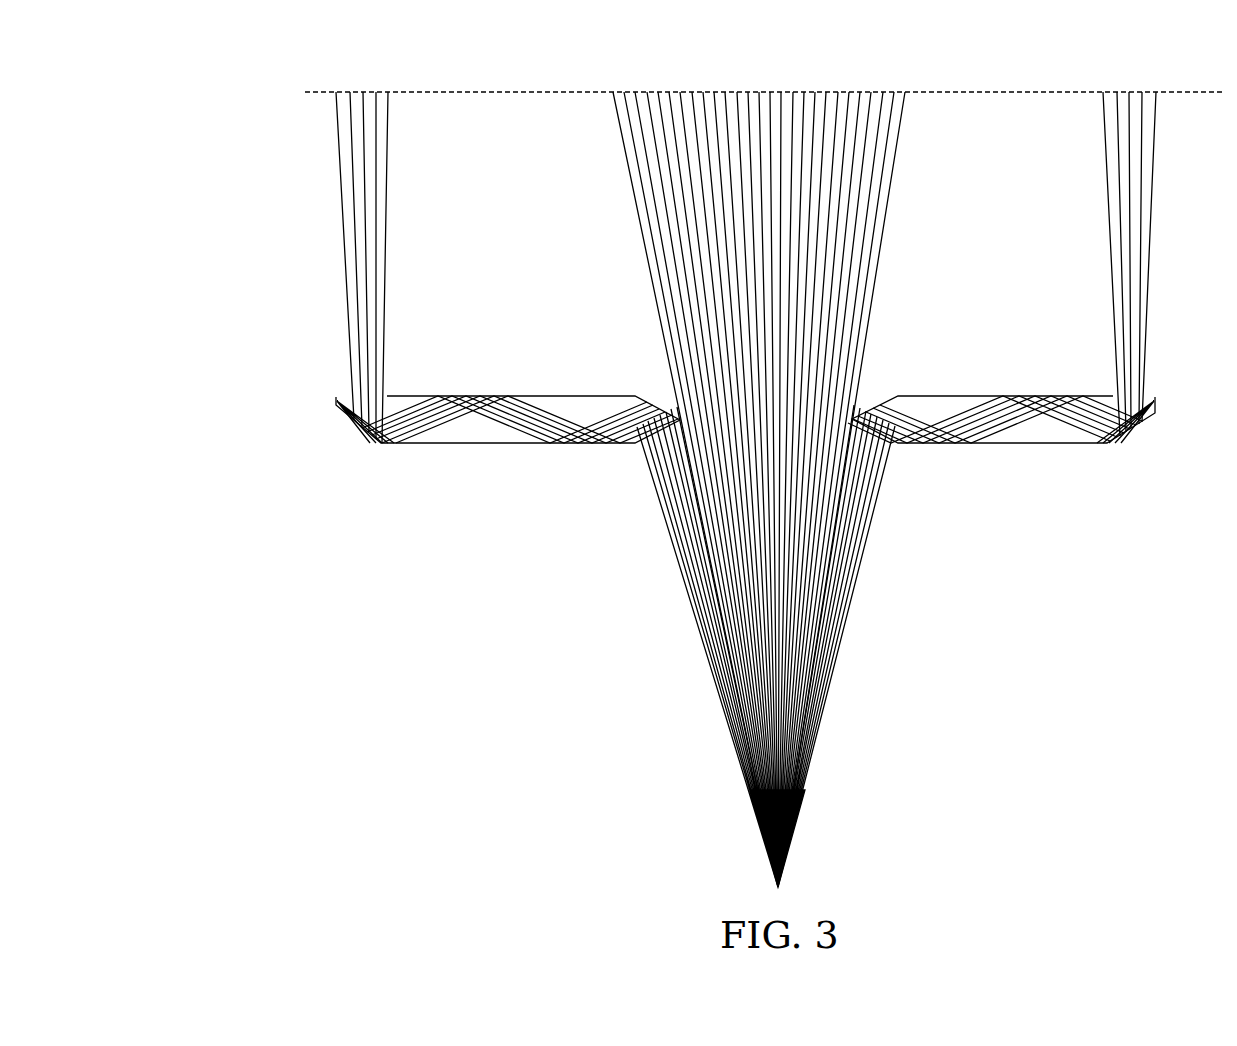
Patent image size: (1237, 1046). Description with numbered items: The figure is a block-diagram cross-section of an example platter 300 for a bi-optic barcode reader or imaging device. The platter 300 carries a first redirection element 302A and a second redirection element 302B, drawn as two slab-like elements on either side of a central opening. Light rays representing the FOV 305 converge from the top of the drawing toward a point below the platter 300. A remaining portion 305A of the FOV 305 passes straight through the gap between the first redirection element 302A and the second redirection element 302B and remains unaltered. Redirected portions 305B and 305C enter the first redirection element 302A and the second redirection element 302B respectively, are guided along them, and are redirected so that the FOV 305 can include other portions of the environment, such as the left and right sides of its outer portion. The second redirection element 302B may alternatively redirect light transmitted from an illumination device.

The platter 300 is at (242, 84).
The remaining portion of the FOV 305A is at (656, 290).
The redirected portion of the FOV 305B is at (355, 288).
The redirected portion of the FOV 305C is at (1112, 258).
The first redirection element 302A is at (470, 444).
The second redirection element 302B is at (1047, 444).
The FOV 305 is at (763, 851).